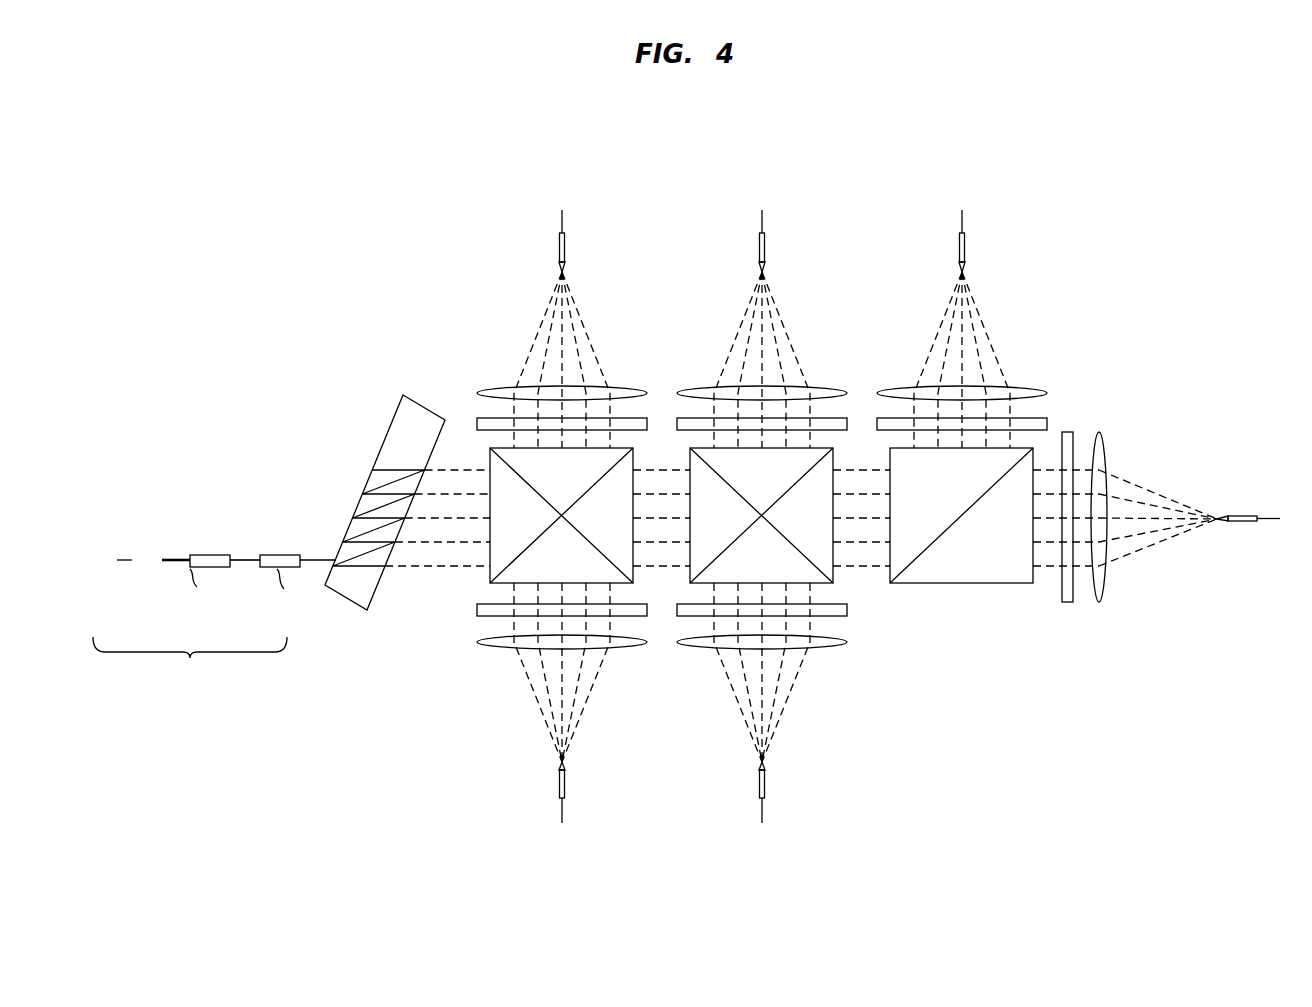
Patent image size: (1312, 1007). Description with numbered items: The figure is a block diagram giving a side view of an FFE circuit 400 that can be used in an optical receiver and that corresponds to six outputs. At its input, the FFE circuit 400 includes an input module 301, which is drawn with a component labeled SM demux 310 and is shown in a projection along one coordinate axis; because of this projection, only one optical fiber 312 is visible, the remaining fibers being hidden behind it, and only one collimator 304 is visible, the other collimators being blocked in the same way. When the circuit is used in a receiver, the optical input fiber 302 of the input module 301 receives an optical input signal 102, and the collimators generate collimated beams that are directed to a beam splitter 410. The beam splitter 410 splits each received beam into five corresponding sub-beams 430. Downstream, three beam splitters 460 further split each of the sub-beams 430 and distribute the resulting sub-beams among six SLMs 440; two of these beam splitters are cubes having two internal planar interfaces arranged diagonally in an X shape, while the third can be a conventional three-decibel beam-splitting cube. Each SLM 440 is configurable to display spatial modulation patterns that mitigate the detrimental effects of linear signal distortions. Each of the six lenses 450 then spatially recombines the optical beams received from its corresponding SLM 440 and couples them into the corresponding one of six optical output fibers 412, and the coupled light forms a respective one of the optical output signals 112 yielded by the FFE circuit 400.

The FFE circuit 400 is at (177, 161).
The optical input signal 102 is at (120, 557).
The optical input fiber 302 is at (166, 557).
The single-mode demultiplexer 310 is at (205, 553).
The optical fiber 312 is at (250, 553).
The collimator 304 is at (295, 553).
The input module 301 is at (190, 662).
The beam splitter 410 is at (332, 613).
The sub-beams 430 is at (392, 590).
The beam splitters 460 is at (963, 602).
The SLMs 440 is at (1055, 385).
The lenses 450 is at (1122, 602).
The optical signals 112 is at (1268, 517).
The optical output fibers 412 is at (567, 233).